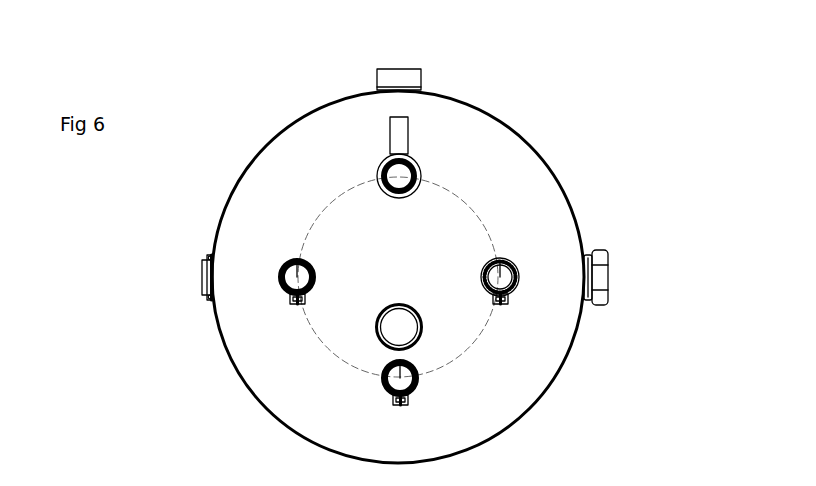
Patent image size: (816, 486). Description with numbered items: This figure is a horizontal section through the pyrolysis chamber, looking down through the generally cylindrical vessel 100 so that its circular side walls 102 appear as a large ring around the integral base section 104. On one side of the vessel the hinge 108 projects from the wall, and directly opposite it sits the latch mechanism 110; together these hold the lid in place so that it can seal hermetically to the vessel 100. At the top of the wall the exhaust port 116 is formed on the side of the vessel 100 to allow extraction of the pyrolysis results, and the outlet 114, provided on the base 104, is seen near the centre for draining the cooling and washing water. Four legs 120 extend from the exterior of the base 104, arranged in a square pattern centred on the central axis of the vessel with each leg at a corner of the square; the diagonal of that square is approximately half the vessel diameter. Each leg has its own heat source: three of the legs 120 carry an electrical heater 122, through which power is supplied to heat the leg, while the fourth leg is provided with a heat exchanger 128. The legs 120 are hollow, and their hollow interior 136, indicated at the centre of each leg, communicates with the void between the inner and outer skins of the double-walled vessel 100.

The cylindrical vessel 100 is at (231, 200).
The circular side walls 102 is at (530, 145).
The base section 104 is at (533, 363).
The hinge 108 is at (610, 277).
The latch mechanism 110 is at (203, 278).
The outlet 114 is at (377, 339).
The exhaust port 116 is at (421, 78).
The legs 120 is at (420, 172).
The electrical heater 122 is at (297, 258).
The heat exchanger 128 is at (391, 162).
The hollow interior 136 is at (500, 277).